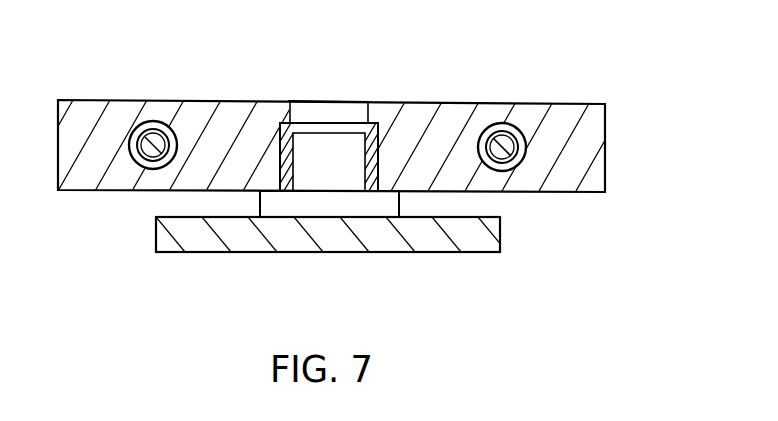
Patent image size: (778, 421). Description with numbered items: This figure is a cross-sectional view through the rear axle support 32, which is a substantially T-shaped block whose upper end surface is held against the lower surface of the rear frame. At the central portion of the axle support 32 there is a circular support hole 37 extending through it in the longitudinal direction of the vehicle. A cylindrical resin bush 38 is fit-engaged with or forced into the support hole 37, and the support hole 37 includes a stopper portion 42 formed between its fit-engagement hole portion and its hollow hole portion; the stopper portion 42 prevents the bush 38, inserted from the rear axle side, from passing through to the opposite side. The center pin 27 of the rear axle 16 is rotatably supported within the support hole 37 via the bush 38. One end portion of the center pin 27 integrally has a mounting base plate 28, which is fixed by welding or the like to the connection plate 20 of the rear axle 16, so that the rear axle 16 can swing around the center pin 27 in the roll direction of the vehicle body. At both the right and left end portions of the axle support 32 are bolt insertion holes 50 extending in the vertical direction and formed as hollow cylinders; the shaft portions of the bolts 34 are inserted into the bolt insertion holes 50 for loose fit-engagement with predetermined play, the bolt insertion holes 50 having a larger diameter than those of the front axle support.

The rear axle 16 is at (461, 256).
The connection plate 20 is at (228, 235).
The center pin 27 is at (315, 148).
The mounting base plate 28 is at (385, 208).
The rear axle support 32 is at (608, 136).
The bolt 34 is at (157, 130).
The support hole 37 is at (335, 116).
The bush 38 is at (379, 140).
The stopper portion 42 is at (374, 121).
The bolt insertion hole 50 is at (140, 167).